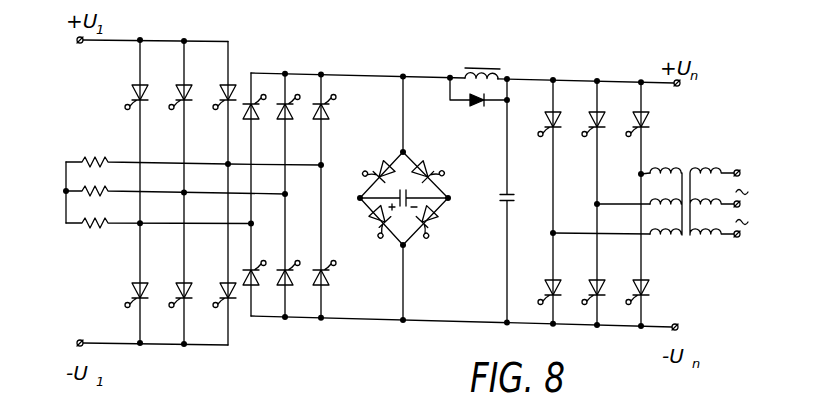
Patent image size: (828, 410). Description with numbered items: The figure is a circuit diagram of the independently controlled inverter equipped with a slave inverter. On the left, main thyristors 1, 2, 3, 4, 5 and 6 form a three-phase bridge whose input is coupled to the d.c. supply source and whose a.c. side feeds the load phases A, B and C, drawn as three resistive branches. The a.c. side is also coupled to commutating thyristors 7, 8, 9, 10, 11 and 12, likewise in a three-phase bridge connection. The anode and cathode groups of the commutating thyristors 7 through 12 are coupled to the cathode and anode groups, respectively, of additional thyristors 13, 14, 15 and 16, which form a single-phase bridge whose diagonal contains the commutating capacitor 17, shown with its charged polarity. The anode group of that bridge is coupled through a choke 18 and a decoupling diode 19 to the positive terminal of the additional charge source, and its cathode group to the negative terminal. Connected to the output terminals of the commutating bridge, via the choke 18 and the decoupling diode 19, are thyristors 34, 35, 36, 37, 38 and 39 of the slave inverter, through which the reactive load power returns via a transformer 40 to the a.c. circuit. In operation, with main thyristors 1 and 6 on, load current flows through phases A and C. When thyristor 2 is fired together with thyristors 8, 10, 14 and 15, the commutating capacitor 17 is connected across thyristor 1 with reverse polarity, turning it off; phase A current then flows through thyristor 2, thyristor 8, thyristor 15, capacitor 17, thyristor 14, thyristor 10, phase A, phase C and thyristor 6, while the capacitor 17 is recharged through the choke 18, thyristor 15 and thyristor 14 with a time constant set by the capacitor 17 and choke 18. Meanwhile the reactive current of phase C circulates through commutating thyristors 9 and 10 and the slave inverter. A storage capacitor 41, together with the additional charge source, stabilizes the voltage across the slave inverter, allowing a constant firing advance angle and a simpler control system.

The main thyristor 1 is at (131, 90).
The main thyristor 2 is at (175, 90).
The main thyristor 3 is at (219, 90).
The main thyristor 4 is at (131, 296).
The main thyristor 5 is at (176, 284).
The main thyristor 6 is at (220, 284).
The commutating thyristor 7 is at (259, 105).
The commutating thyristor 8 is at (293, 105).
The commutating thyristor 9 is at (329, 105).
The commutating thyristor 10 is at (259, 271).
The commutating thyristor 11 is at (293, 271).
The commutating thyristor 12 is at (329, 271).
The additional thyristor 13 is at (392, 160).
The additional thyristor 14 is at (372, 217).
The additional thyristor 15 is at (426, 167).
The additional thyristor 16 is at (436, 222).
The commutating capacitor 17 is at (409, 193).
The choke 18 is at (474, 58).
The decoupling diode 19 is at (478, 110).
The slave inverter thyristor 34 is at (545, 115).
The slave inverter thyristor 35 is at (589, 115).
The slave inverter thyristor 36 is at (633, 115).
The slave inverter thyristor 37 is at (545, 285).
The slave inverter thyristor 38 is at (589, 285).
The slave inverter thyristor 39 is at (634, 285).
The transformer 40 is at (699, 188).
The storage capacitor 41 is at (510, 193).
The phase A is at (158, 237).
The phase B is at (103, 190).
The phase C is at (107, 157).